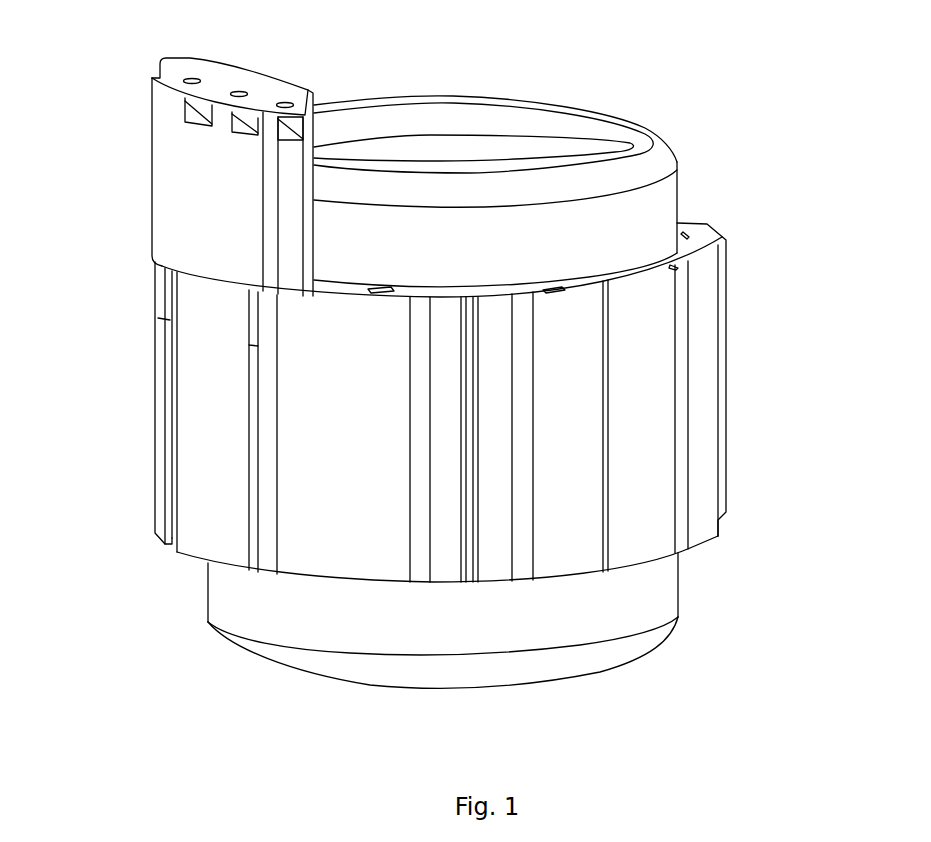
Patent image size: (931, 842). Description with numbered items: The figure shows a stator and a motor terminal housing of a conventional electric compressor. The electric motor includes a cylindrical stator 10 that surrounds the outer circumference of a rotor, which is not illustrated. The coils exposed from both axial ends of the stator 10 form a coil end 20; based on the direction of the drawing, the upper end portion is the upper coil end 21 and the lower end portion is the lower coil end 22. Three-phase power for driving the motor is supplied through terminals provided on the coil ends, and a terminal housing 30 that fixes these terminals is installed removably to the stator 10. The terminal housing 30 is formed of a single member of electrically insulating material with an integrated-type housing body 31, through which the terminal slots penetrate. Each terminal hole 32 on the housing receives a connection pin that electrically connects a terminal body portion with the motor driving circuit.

The stator 10 is at (703, 366).
The coil end 20 is at (508, 392).
The upper coil end 21 is at (667, 207).
The lower coil end 22 is at (495, 620).
The terminal housing 30 is at (174, 157).
The housing body 31 is at (166, 166).
The terminal hole 32 is at (285, 104).